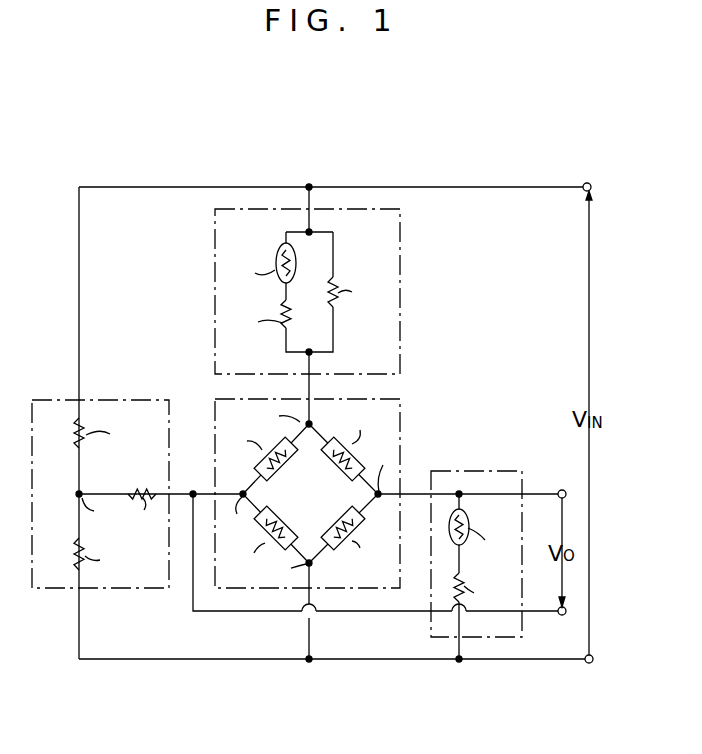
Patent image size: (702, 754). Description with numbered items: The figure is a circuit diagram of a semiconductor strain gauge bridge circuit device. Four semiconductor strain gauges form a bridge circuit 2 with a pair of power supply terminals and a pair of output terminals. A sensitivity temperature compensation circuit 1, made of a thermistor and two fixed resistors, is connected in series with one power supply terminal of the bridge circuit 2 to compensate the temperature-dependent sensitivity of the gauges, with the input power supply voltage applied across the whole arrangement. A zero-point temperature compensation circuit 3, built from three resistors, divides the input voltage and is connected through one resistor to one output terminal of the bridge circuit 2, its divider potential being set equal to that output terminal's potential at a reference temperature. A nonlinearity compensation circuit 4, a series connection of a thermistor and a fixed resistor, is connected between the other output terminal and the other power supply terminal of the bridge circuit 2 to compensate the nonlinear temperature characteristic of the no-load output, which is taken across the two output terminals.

The sensitivity temperature compensation circuit 1 is at (400, 280).
The bridge circuit 2 is at (400, 424).
The zero-point temperature compensation circuit 3 is at (143, 398).
The nonlinearity compensation circuit 4 is at (497, 470).